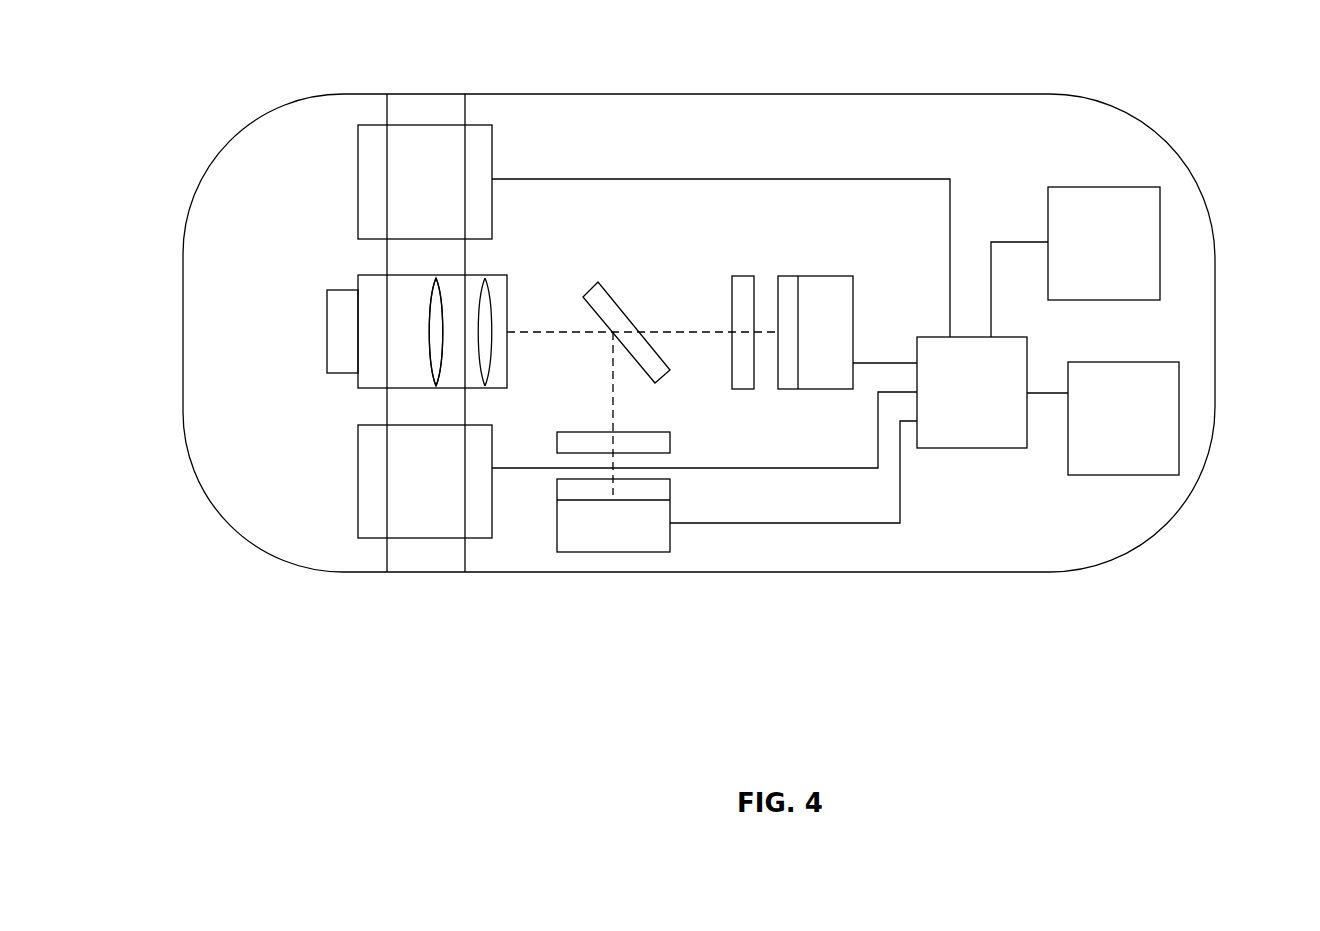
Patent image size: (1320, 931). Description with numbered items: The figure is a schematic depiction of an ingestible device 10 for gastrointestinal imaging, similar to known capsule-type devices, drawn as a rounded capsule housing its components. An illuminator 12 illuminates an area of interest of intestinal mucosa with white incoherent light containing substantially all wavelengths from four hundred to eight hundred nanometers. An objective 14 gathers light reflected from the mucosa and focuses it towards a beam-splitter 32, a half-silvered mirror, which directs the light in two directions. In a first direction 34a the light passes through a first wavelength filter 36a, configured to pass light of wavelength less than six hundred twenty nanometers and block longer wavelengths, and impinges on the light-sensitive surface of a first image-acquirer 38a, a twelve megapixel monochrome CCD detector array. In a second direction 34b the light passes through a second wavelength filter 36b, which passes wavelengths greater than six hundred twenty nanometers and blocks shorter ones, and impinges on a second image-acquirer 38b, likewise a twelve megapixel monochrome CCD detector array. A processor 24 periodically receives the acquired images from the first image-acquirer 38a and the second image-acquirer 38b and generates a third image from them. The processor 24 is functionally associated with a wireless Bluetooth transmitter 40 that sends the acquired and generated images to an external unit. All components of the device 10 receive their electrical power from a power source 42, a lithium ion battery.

The ingestible device 10 is at (300, 701).
The illuminator 12 is at (452, 140).
The objective 14 is at (327, 337).
The processor 24 is at (967, 450).
The beam-splitter 32 is at (605, 287).
The first direction 34a is at (673, 332).
The second direction 34b is at (612, 390).
The first wavelength filter 36a is at (748, 275).
The second wavelength filter 36b is at (670, 442).
The first image-acquirer 38a is at (825, 276).
The second image-acquirer 38b is at (613, 538).
The wireless Bluetooth transmitter 40 is at (1140, 205).
The power source 42 is at (1167, 442).